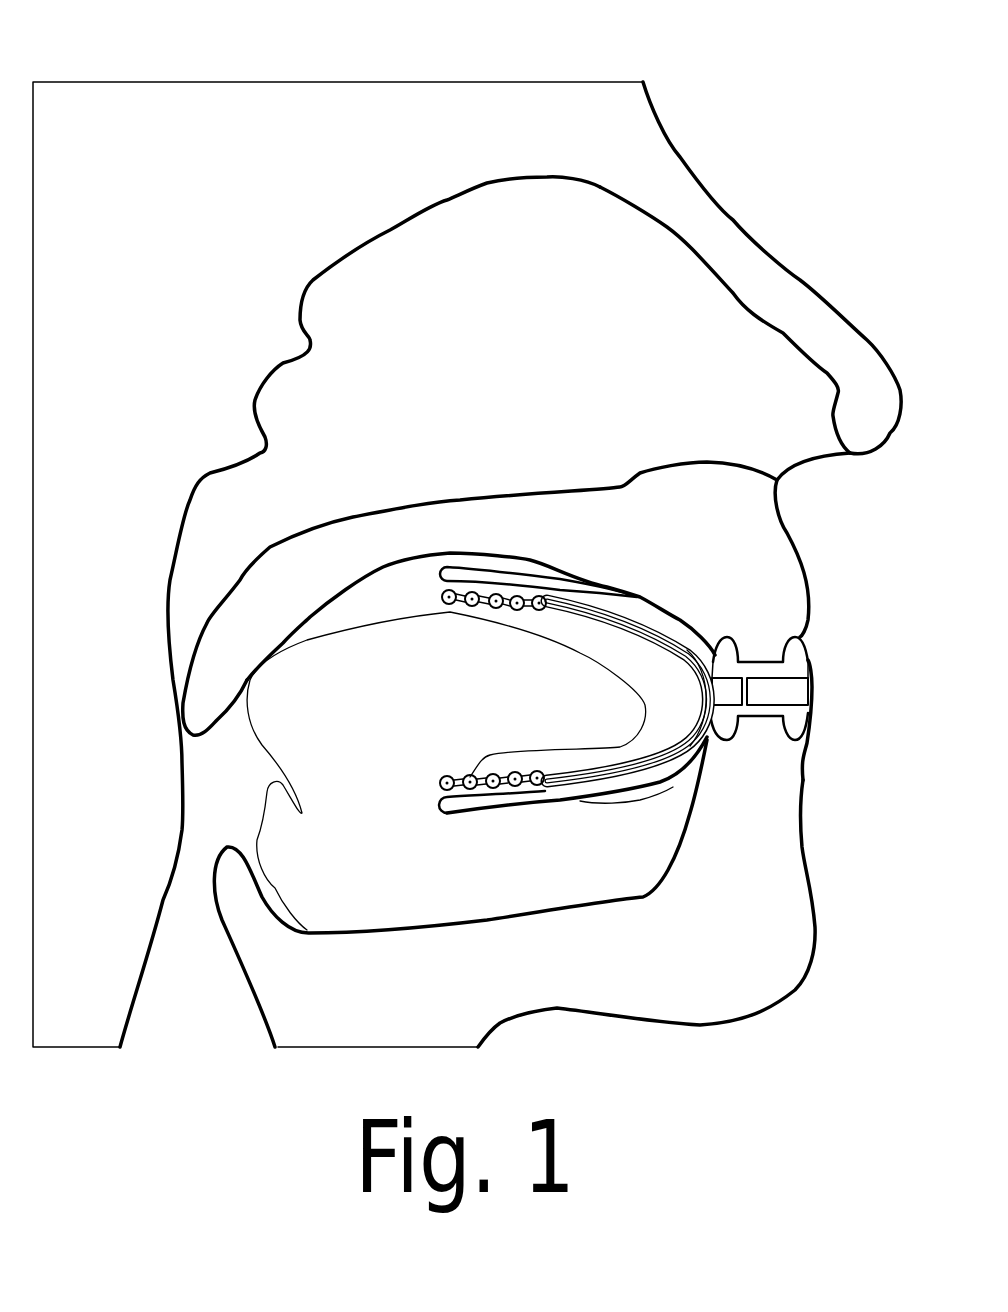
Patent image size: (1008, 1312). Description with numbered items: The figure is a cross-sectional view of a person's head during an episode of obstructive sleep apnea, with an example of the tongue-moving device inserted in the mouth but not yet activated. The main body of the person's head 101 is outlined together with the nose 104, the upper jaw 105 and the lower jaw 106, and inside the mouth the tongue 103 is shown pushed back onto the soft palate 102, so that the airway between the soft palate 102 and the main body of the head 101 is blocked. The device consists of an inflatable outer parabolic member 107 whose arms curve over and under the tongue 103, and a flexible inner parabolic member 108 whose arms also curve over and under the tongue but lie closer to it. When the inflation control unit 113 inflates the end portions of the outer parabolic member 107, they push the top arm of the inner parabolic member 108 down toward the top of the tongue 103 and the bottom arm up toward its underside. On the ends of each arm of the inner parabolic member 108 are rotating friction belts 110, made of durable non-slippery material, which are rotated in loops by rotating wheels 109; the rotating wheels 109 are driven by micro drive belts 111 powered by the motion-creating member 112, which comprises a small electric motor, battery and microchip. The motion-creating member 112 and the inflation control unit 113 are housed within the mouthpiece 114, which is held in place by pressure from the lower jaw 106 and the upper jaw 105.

The main body of the person's head 101 is at (187, 308).
The soft palate 102 is at (270, 590).
The tongue 103 is at (302, 715).
The nose 104 is at (778, 302).
The upper jaw 105 is at (750, 566).
The lower jaw 106 is at (757, 795).
The inflatable outer parabolic member 107 is at (492, 590).
The flexible inner parabolic member 108 is at (605, 623).
The rotating wheels 109 is at (440, 597).
The rotating friction belts 110 is at (523, 610).
The micro drive belts 111 is at (687, 657).
The motion-creating member 112 is at (730, 693).
The inflation control unit 113 is at (787, 693).
The mouthpiece 114 is at (787, 667).